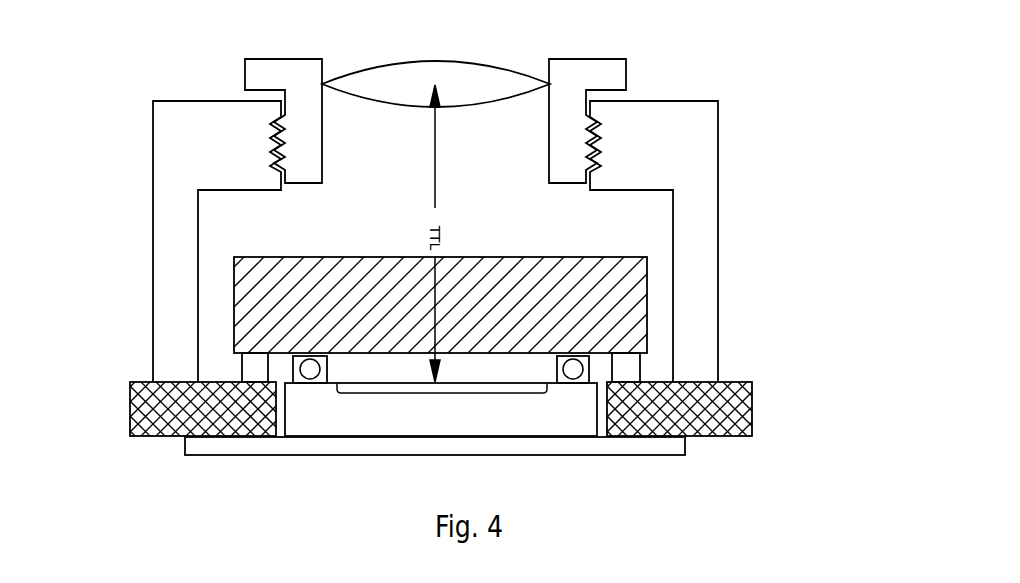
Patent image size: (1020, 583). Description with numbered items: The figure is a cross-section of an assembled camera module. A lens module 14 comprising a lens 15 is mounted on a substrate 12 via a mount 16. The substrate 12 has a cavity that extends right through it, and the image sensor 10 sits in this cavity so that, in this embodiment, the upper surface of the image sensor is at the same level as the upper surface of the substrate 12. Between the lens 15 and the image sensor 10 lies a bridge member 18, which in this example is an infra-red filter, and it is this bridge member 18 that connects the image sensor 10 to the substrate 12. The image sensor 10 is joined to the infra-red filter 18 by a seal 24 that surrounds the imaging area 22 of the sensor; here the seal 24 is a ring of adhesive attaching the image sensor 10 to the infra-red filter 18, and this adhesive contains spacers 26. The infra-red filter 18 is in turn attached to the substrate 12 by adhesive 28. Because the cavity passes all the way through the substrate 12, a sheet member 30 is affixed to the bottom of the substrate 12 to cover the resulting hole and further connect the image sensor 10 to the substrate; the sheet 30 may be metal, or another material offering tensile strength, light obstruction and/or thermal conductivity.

The image sensor 10 is at (552, 412).
The substrate 12 is at (143, 397).
The lens module 14 is at (258, 77).
The lens 15 is at (468, 73).
The mount 16 is at (170, 162).
The bridge member 18 is at (620, 283).
The imaging area 22 is at (473, 388).
The seal 24 is at (298, 383).
The spacers 26 is at (310, 370).
The adhesive 28 is at (255, 366).
The sheet member 30 is at (648, 448).